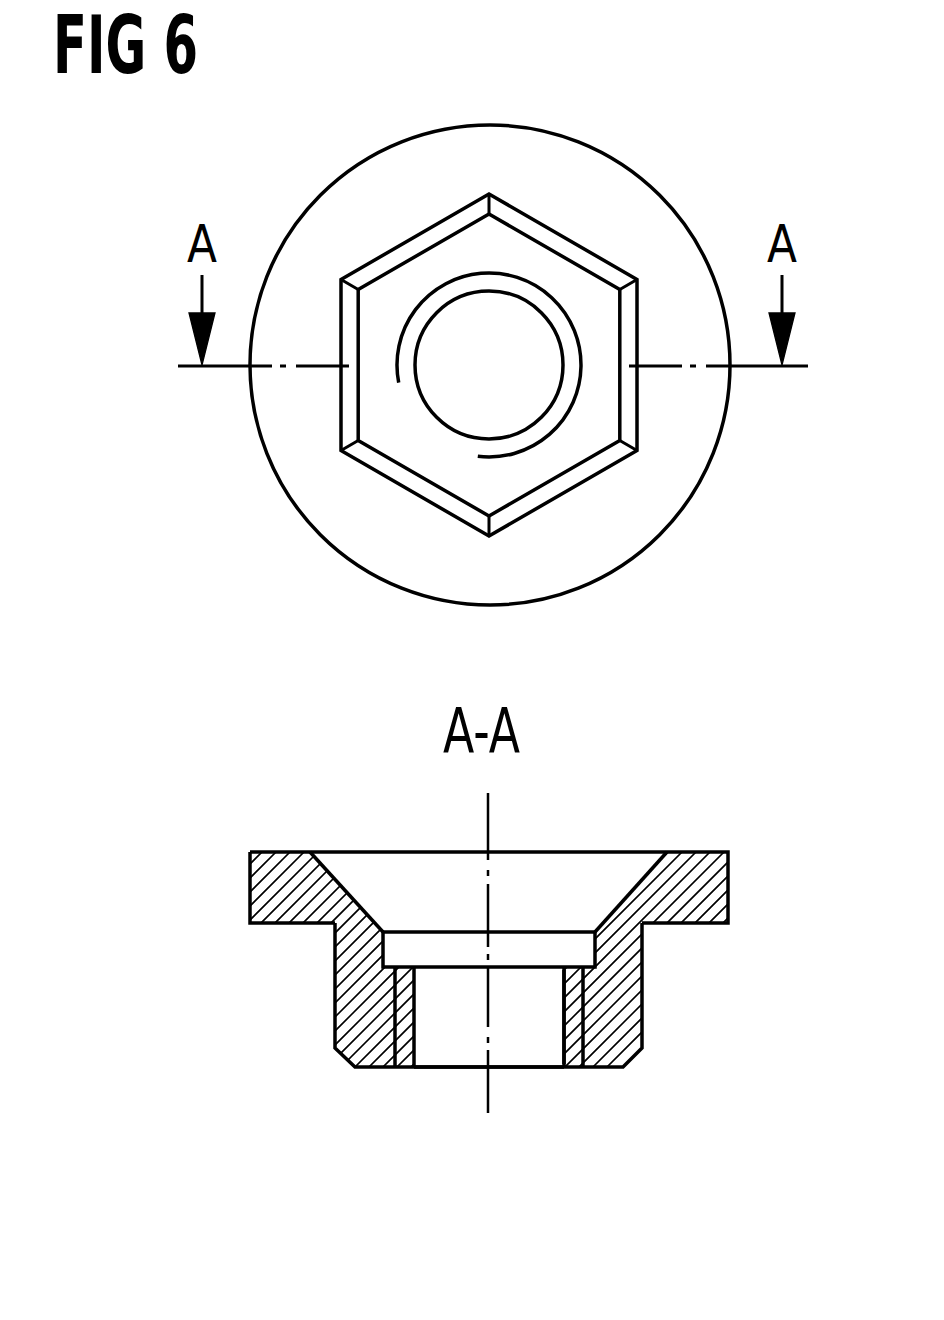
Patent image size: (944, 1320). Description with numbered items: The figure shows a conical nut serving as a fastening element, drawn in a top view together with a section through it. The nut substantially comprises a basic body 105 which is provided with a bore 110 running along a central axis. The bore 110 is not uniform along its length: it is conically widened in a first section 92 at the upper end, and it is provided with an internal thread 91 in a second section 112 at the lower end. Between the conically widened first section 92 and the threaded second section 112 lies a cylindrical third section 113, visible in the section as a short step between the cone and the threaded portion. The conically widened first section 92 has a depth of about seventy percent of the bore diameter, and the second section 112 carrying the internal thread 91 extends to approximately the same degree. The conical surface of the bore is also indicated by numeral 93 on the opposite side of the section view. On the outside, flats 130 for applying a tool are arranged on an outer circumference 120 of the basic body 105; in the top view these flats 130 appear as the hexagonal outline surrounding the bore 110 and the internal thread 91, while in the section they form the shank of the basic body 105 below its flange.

The basic body 105 is at (666, 482).
The bore 110 is at (466, 350).
The second section 112 is at (527, 1040).
The cylindrical third section 113 is at (528, 950).
The internal thread 91 is at (534, 299).
The first section 92 is at (626, 893).
The conical surface 93 is at (483, 898).
The outer circumference 120 is at (351, 630).
The flats 130 is at (340, 424).